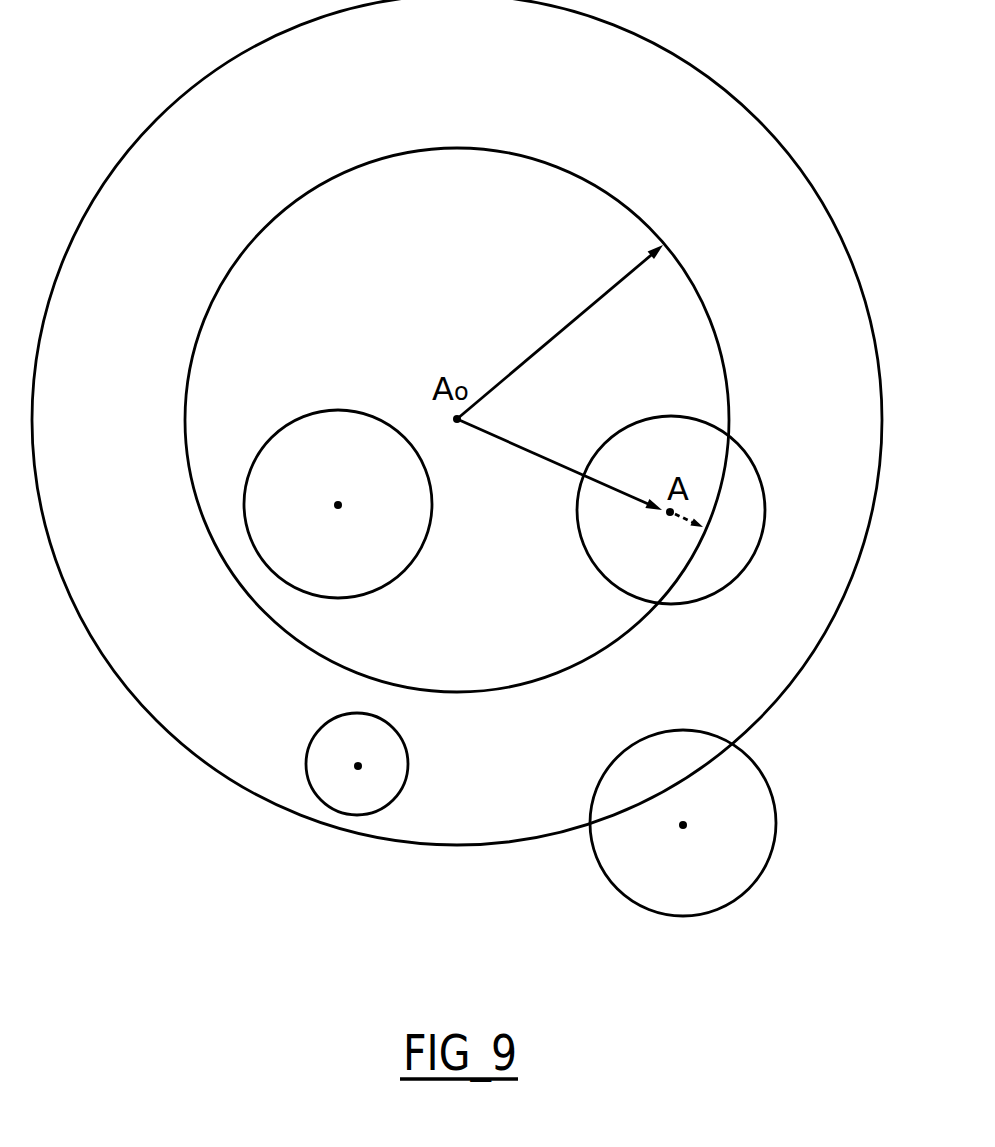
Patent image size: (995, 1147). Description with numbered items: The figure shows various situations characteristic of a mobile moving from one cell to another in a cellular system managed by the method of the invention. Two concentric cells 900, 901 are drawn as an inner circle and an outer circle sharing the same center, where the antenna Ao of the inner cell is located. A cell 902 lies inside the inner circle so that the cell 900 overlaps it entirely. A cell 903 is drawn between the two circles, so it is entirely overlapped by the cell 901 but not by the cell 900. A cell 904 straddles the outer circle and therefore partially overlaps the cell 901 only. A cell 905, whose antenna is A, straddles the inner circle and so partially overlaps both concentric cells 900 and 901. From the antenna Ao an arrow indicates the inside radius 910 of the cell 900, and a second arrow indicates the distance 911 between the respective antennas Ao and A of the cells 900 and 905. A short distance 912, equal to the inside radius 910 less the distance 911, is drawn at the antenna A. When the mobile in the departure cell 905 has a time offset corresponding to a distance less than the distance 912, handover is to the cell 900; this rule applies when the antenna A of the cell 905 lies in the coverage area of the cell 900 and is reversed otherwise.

The concentric cell 900 is at (710, 305).
The concentric cell 901 is at (795, 150).
The cell 902 is at (270, 437).
The cell 903 is at (405, 755).
The cell 904 is at (776, 812).
The cell 905 is at (747, 453).
The inside radius 910 is at (552, 335).
The distance 911 is at (533, 452).
The distance 912 is at (690, 512).